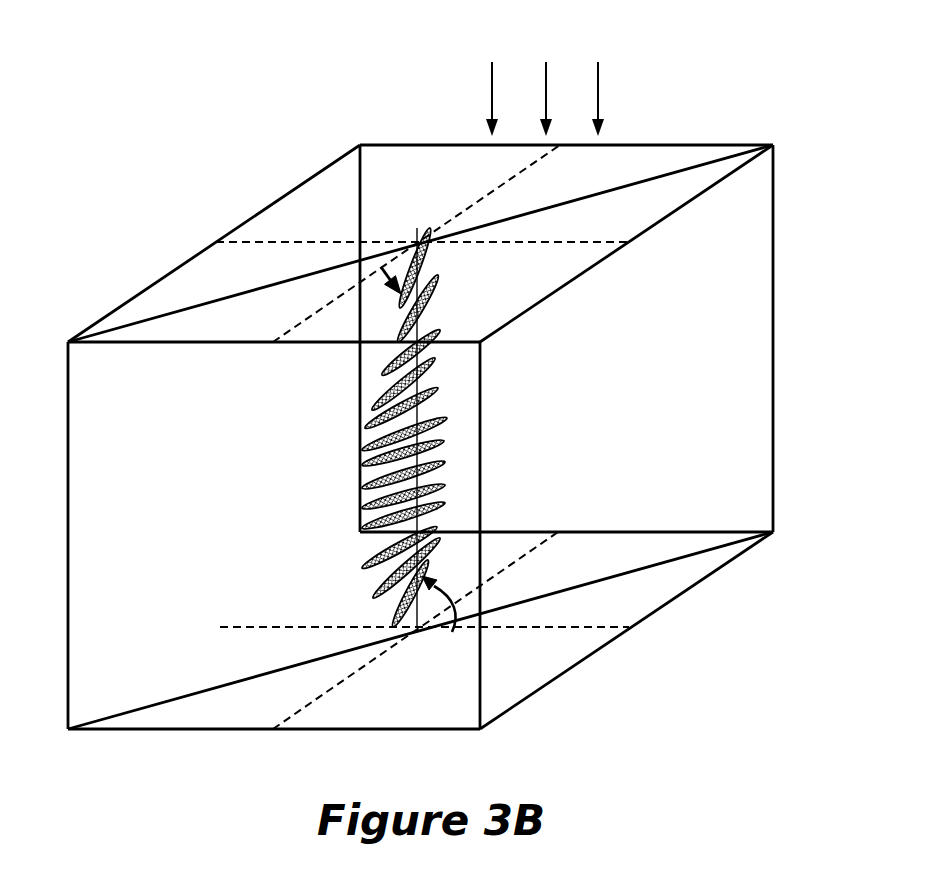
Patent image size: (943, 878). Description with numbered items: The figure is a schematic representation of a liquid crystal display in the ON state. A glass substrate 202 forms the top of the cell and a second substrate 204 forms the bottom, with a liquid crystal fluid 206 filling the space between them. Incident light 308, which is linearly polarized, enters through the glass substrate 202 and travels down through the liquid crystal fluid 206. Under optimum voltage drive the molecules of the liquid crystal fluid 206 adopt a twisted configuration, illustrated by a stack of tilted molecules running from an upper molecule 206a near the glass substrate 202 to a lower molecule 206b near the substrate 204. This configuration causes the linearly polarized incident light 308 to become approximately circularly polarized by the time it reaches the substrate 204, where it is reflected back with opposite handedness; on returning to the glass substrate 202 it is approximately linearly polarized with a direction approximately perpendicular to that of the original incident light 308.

The glass substrate 202 is at (705, 144).
The substrate 204 is at (695, 585).
The liquid crystal fluid 206 is at (667, 408).
The molecule 206a is at (430, 251).
The liquid crystal molecule near bottom substrate 206b is at (393, 620).
The incident light 308 is at (568, 52).